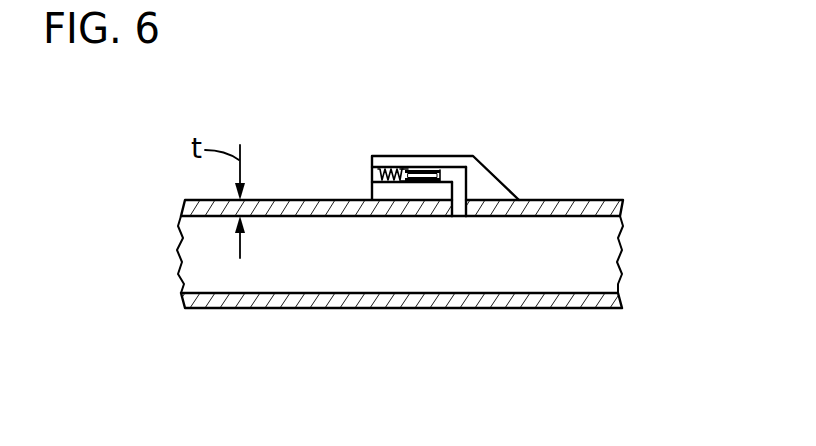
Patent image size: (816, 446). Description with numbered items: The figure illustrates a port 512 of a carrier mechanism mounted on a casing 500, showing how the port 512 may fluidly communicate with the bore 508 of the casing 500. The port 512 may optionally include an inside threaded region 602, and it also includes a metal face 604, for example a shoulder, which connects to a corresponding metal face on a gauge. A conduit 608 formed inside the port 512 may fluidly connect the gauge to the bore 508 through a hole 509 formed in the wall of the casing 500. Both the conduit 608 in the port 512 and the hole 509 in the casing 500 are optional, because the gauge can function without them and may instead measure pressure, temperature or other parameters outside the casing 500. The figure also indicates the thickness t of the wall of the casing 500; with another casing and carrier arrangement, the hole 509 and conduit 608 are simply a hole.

The casing 500 is at (441, 214).
The bore 508 is at (570, 263).
The hole 509 is at (457, 216).
The port 512 is at (423, 157).
The inside threaded region 602 is at (391, 170).
The metal face 604 is at (372, 164).
The conduit 608 is at (464, 181).